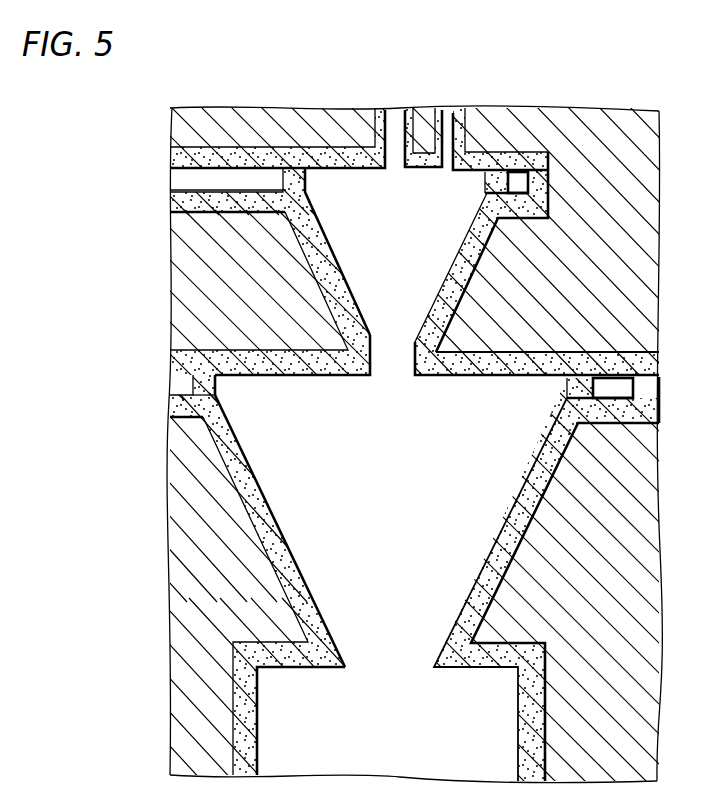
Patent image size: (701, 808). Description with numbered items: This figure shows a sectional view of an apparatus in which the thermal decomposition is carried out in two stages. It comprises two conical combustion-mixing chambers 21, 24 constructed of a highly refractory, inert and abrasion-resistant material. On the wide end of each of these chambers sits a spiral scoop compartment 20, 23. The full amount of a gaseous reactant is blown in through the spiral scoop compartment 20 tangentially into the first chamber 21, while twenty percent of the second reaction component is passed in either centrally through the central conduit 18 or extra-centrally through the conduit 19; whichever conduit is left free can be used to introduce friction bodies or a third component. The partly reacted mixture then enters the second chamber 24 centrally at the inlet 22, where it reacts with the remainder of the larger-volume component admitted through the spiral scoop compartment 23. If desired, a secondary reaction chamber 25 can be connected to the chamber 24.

The central conduit 18 is at (393, 122).
The extra-central conduit 19 is at (447, 124).
The spiral scoop compartment 20 is at (200, 178).
The conical combustion-mixing chamber 21 is at (357, 250).
The central inlet 22 is at (390, 367).
The spiral scoop compartment 23 is at (184, 386).
The conical combustion-mixing chamber 24 is at (307, 500).
The secondary reaction chamber 25 is at (277, 708).